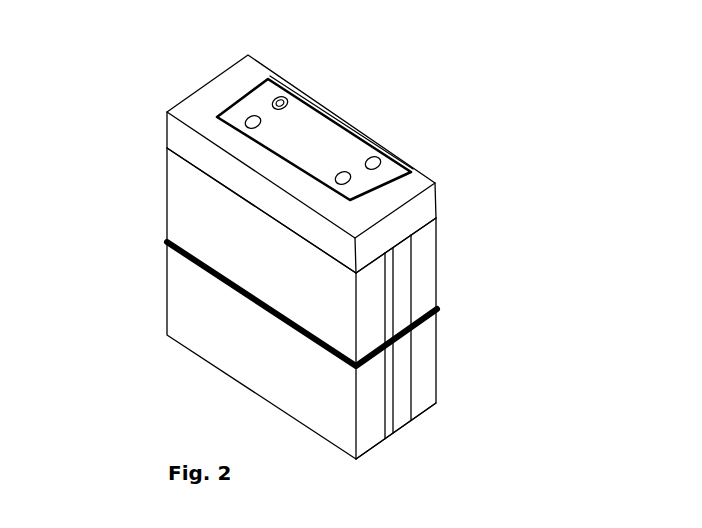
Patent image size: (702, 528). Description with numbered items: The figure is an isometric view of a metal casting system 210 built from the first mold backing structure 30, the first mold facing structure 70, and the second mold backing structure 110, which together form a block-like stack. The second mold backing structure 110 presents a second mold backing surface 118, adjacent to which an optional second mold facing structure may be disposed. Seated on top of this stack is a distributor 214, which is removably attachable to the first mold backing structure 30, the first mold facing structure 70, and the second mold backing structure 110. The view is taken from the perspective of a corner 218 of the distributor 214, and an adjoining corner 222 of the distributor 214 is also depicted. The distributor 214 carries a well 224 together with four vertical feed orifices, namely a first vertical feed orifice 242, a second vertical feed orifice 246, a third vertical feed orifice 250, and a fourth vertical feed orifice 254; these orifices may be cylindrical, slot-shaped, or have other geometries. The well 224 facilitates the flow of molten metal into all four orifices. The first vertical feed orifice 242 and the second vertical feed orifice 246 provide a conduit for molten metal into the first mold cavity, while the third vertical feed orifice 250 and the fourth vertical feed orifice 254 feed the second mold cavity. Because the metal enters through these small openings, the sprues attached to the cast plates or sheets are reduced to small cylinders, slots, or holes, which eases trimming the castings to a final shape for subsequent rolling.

The second mold backing structure 110 is at (431, 409).
The first mold backing structure 30 is at (407, 428).
The first mold facing structure 70 is at (372, 448).
The second mold backing surface 118 is at (220, 282).
The metal casting system 210 is at (155, 170).
The distributor 214 is at (302, 115).
The corner 218 is at (359, 226).
The adjoining corner 222 is at (375, 284).
The well 224 is at (287, 98).
The first vertical feed orifice 242 is at (253, 116).
The second vertical feed orifice 246 is at (341, 176).
The third vertical feed orifice 250 is at (280, 96).
The fourth vertical feed orifice 254 is at (374, 160).